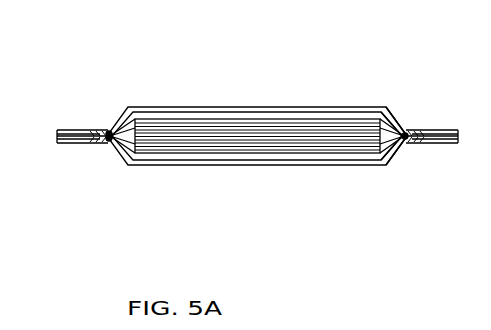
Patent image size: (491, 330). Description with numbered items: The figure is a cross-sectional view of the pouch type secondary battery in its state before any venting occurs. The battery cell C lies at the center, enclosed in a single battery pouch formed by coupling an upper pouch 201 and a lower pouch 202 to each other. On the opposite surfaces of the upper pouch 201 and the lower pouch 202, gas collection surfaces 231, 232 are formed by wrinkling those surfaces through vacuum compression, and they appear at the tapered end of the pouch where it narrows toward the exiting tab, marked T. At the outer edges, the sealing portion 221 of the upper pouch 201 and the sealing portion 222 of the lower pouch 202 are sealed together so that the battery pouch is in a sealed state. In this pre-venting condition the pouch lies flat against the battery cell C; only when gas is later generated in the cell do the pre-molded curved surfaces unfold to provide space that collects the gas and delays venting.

The upper pouch 201 is at (312, 106).
The lower pouch 202 is at (215, 167).
The sealing portion of the upper pouch 221 is at (65, 130).
The sealing portion of the lower pouch 222 is at (60, 144).
The gas collection surface 231 is at (106, 130).
The gas collection surface 232 is at (97, 146).
The battery cell C is at (348, 168).
The taper portion T is at (397, 160).